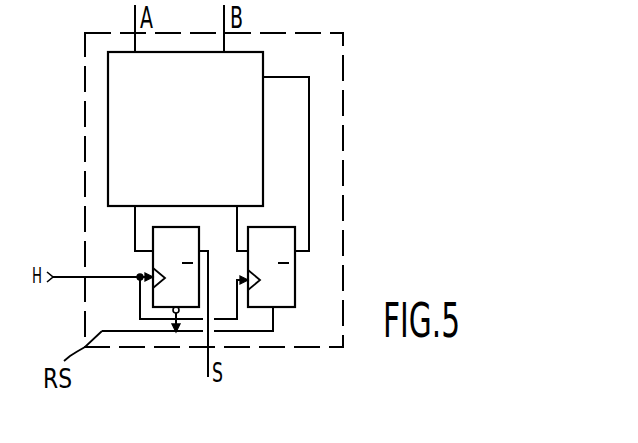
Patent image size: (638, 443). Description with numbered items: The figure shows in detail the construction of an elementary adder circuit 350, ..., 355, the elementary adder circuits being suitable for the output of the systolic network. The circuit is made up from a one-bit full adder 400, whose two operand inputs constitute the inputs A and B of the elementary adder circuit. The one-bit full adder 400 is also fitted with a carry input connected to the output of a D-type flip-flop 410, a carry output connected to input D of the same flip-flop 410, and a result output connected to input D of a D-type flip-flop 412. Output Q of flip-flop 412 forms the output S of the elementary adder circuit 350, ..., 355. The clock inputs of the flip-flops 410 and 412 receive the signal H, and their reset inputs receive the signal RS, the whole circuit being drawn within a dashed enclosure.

The elementary adder circuit 350 is at (284, 190).
The elementary adder circuit 355 is at (328, 121).
The one-bit full adder 400 is at (280, 134).
The D-type flip-flop 412 is at (153, 298).
The D-type flip-flop 410 is at (313, 304).